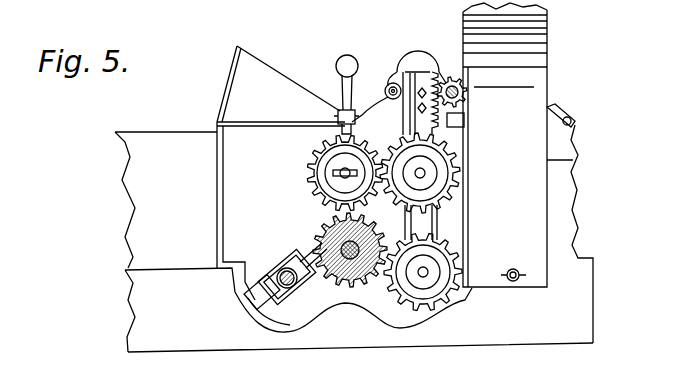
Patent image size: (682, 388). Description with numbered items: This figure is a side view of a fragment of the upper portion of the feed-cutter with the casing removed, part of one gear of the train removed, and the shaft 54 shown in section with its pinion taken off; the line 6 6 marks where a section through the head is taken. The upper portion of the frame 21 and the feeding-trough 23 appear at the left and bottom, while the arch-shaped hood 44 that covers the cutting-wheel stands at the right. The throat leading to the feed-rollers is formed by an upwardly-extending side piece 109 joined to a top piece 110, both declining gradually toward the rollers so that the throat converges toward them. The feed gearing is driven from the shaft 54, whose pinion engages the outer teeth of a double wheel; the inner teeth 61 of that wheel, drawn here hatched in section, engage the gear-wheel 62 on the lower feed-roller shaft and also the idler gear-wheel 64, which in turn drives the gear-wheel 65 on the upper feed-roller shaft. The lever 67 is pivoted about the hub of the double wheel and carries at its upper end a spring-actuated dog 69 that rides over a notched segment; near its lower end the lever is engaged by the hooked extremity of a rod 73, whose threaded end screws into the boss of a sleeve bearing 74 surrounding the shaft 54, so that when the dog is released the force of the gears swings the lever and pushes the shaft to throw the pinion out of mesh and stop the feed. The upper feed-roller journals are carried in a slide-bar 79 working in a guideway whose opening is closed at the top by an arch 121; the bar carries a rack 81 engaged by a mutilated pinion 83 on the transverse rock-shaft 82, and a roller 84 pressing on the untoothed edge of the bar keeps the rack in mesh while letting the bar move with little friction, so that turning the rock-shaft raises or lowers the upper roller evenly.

The section line 6 is at (318, 218).
The upper portion of the frame 21 is at (150, 350).
The feeding-trough 23 is at (166, 200).
The arch-shaped hood 44 is at (547, 67).
The shaft 54 is at (293, 283).
The inner teeth of the double wheel 61 is at (362, 292).
The gear-wheel 62 is at (458, 290).
The idler gear-wheel 64 is at (312, 162).
The gear-wheel 65 is at (452, 170).
The lever 67 is at (338, 58).
The spring-actuated dog or pawl 69 is at (338, 112).
The rod 73 is at (307, 249).
The bearing 74 is at (262, 286).
The slide-bar 79 is at (413, 62).
The rack 81 is at (436, 70).
The rock-shaft 82 is at (464, 88).
The mutilated pinion 83 is at (508, 105).
The roller 84 is at (389, 85).
The side piece 109 is at (240, 84).
The top piece 110 is at (254, 68).
The arch 121 is at (417, 47).